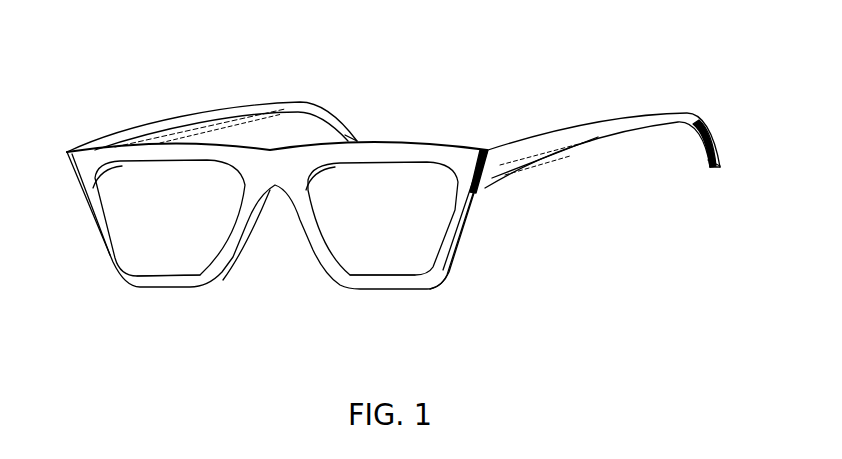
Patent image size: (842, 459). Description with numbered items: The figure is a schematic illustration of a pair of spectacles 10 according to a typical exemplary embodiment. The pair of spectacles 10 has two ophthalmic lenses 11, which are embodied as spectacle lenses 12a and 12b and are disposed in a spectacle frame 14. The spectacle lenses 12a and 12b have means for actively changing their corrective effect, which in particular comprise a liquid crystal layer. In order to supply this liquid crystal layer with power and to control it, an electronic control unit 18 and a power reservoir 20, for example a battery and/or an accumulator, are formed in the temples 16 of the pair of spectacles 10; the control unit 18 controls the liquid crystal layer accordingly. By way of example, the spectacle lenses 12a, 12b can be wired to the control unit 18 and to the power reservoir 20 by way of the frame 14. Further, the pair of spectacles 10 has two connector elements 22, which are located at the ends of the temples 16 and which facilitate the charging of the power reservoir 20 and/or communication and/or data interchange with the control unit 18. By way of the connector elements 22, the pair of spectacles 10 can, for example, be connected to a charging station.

The pair of spectacles 10 is at (488, 67).
The ophthalmic lenses 11 is at (127, 247).
The spectacle lens 12a is at (178, 252).
The spectacle lens 12b is at (375, 252).
The spectacle frame 14 is at (467, 250).
The temples 16 is at (162, 123).
The electronic control unit 18 is at (212, 113).
The power reservoir 20 is at (520, 146).
The connector elements 22 is at (360, 138).